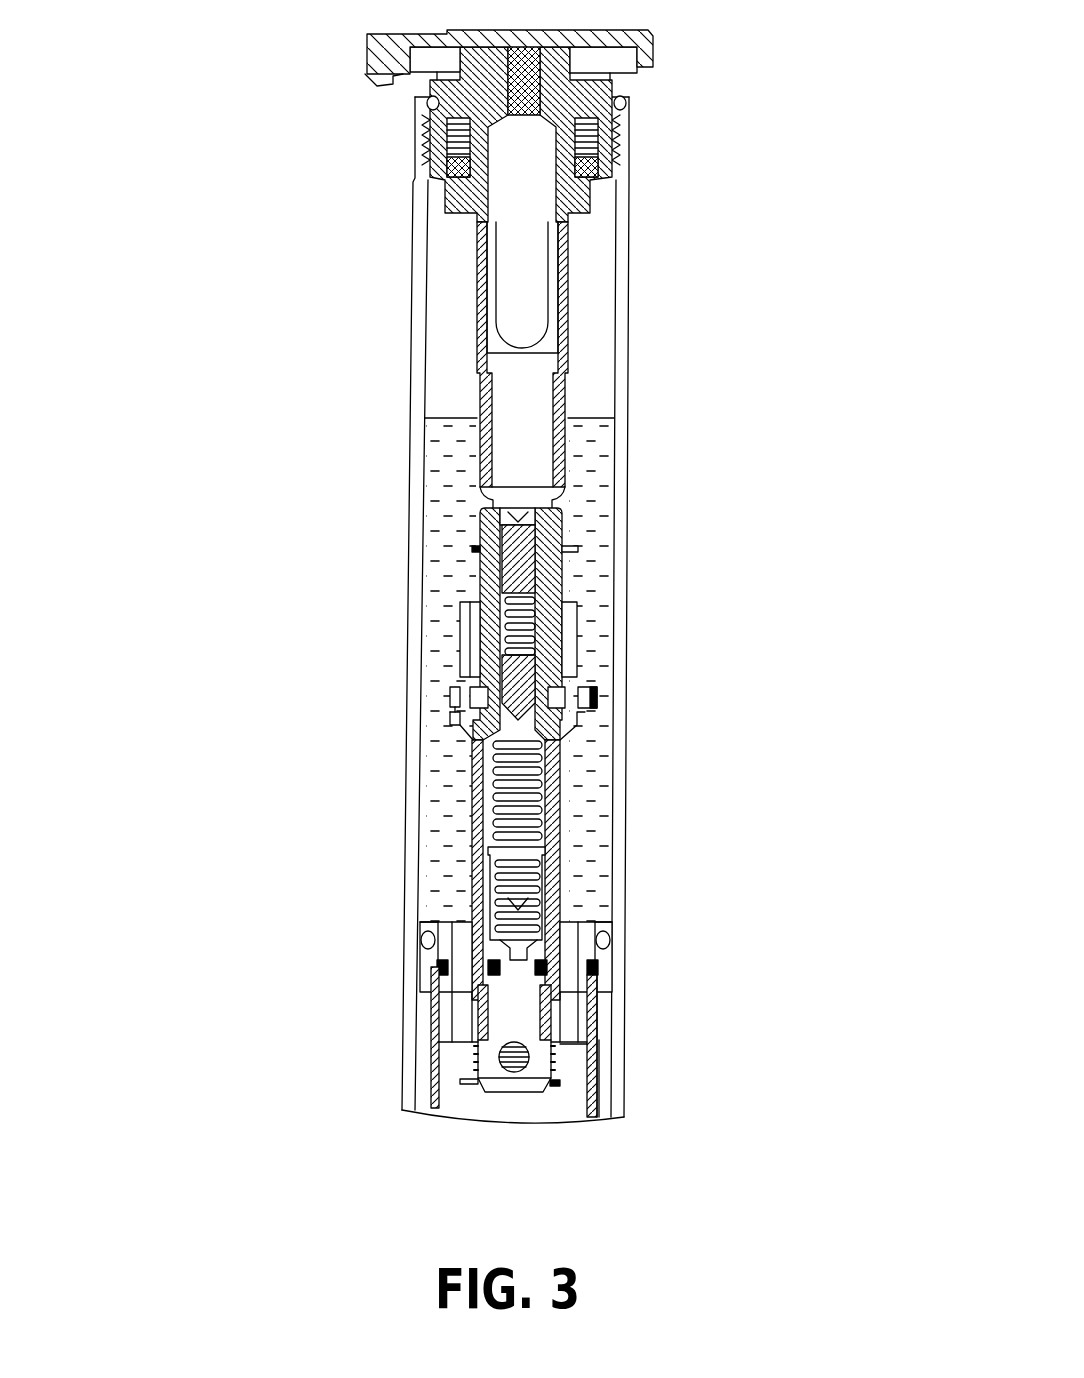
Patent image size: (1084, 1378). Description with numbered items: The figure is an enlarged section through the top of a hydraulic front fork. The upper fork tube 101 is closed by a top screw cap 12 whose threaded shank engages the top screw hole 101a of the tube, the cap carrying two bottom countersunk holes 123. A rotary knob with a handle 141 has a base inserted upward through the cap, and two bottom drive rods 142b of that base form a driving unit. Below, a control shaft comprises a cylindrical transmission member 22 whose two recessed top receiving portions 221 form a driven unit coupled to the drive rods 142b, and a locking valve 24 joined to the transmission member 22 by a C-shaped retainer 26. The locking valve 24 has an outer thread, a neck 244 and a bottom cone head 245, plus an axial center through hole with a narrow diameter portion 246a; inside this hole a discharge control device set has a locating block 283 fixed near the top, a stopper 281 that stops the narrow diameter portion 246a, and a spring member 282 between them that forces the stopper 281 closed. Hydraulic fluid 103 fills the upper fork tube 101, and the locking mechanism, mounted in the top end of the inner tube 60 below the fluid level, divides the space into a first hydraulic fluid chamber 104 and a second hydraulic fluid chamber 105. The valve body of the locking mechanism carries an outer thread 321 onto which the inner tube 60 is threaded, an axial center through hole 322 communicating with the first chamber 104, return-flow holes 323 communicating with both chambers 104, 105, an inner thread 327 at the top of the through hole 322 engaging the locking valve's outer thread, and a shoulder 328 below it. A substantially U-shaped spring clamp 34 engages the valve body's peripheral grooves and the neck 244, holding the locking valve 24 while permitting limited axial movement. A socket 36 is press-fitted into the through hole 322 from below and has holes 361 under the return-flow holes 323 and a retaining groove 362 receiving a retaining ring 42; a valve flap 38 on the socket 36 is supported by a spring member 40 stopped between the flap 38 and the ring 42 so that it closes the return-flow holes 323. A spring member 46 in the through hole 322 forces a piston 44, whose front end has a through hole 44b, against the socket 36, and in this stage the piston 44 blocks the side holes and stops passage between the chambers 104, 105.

The upper fork tube 101 is at (410, 633).
The top screw hole 101a is at (623, 145).
The hydraulic fluid 103 is at (448, 418).
The first hydraulic fluid chamber 104 is at (445, 820).
The second hydraulic fluid chamber 105 is at (577, 1062).
The top screw cap 12 is at (418, 84).
The bottom countersunk holes 123 is at (423, 135).
The handle 141 is at (366, 44).
The bottom drive rods 142b is at (520, 302).
The cylindrical transmission member 22 is at (560, 398).
The recessed top receiving portions 221 is at (497, 290).
The locking valve 24 is at (480, 515).
The C-shaped retainer 26 is at (583, 545).
The stopper 281 is at (570, 672).
The spring member 282 is at (543, 593).
The locating block 283 is at (478, 552).
The inner thread 327 is at (473, 655).
The shoulder 328 is at (473, 750).
The bottom cone head 245 is at (455, 718).
The neck 244 is at (560, 672).
The U-shaped spring clamp 34 is at (598, 688).
The narrow diameter portion 246a is at (573, 740).
The axial center through hole 322 is at (560, 810).
The spring member 46 is at (490, 805).
The piston 44 is at (567, 870).
The through hole 44b is at (593, 968).
The socket 36 is at (470, 990).
The return-flow holes 323 is at (458, 930).
The inner tube 60 is at (428, 1086).
The outer thread 321 is at (597, 1025).
The valve flap 38 is at (432, 1040).
The spring member 40 is at (470, 1052).
The holes 361 is at (525, 1072).
The retaining groove 362 is at (475, 1084).
The retaining ring 42 is at (467, 1083).